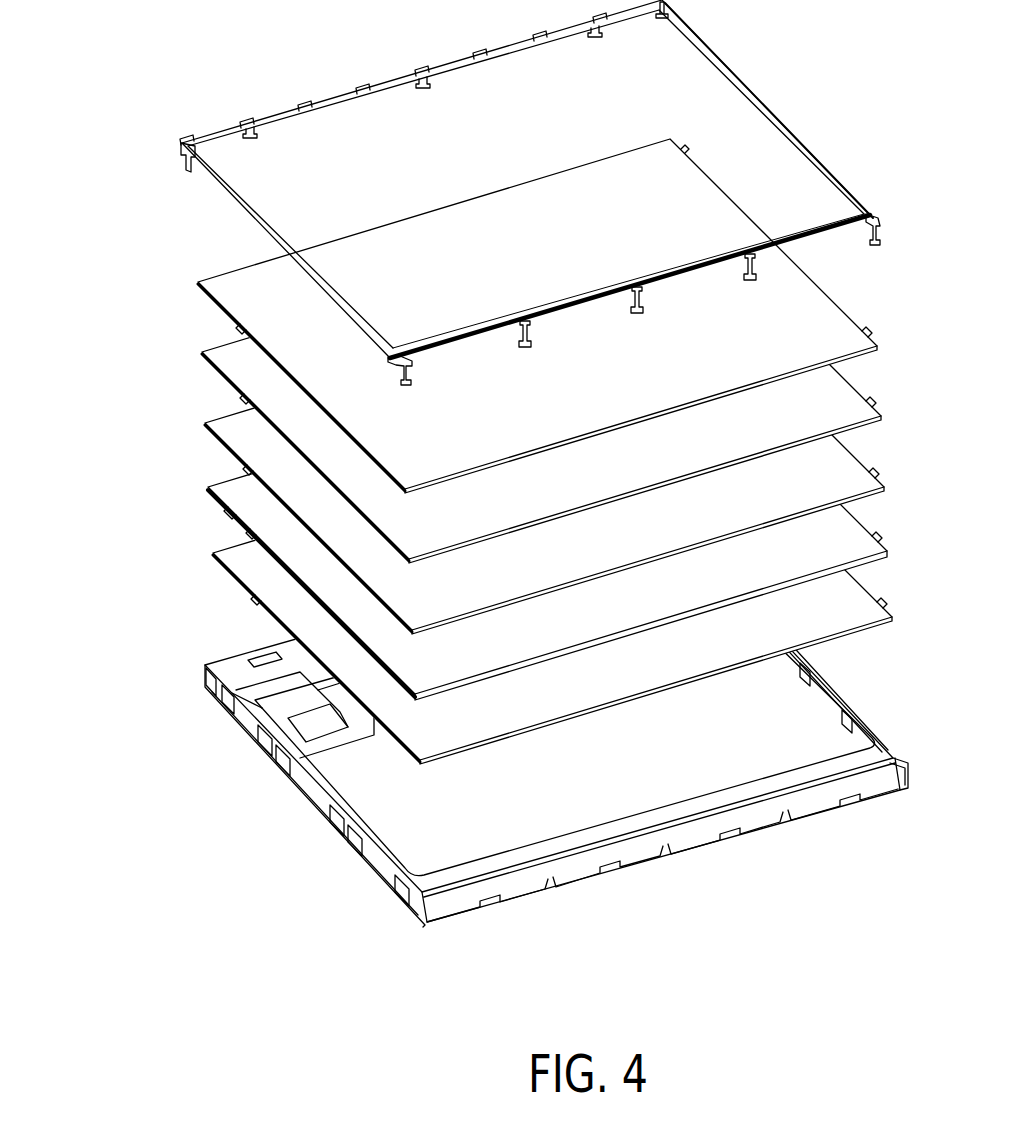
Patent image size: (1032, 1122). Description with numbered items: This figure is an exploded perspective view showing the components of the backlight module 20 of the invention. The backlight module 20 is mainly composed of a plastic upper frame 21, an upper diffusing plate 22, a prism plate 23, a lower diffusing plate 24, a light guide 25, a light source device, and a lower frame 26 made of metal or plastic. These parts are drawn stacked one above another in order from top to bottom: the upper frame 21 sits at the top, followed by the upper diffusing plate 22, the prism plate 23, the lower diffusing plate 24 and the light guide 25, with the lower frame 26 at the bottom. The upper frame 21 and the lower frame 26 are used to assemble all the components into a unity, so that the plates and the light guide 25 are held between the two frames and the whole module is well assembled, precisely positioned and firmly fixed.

The backlight module 20 is at (95, 110).
The upper frame 21 is at (200, 141).
The upper diffusing plate 22 is at (222, 274).
The prism plate 23 is at (222, 346).
The lower diffusing plate 24 is at (222, 417).
The light guide 25 is at (208, 486).
The lower frame 26 is at (215, 662).